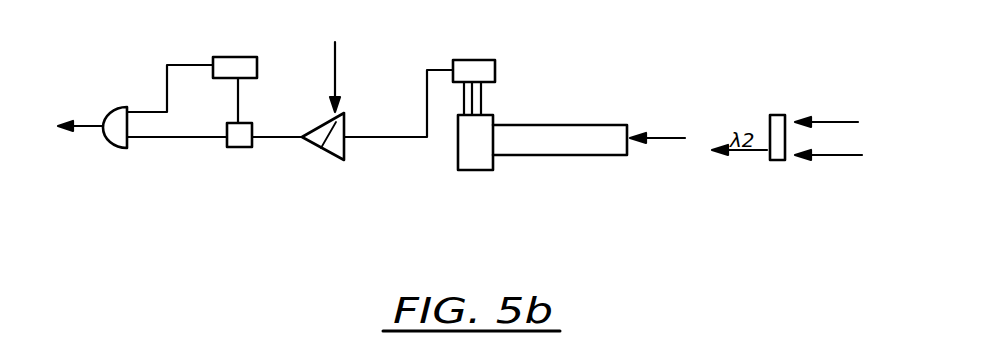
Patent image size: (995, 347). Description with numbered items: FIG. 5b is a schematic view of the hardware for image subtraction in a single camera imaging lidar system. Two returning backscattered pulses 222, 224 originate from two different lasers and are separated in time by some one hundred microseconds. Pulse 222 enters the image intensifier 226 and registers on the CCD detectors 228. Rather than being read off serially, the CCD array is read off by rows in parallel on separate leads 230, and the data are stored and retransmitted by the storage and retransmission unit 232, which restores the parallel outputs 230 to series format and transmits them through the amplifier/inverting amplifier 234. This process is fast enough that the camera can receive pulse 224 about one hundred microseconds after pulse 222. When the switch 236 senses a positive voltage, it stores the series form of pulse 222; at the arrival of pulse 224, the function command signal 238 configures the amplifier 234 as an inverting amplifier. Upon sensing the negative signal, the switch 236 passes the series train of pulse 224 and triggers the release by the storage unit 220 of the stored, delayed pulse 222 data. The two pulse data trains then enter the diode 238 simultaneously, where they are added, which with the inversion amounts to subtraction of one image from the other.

The storage and release unit 220 is at (235, 57).
The returning backscattered pulse 222 is at (660, 139).
The returning backscattered pulse 224 is at (833, 158).
The image intensifier 226 is at (543, 156).
The CCD detectors 228 is at (476, 171).
The separate leads 230 is at (485, 98).
The storage and retransmission unit 232 is at (485, 60).
The amplifier/inverting amplifier 234 is at (327, 155).
The switch 236 is at (238, 148).
The function command signal / diode 238 is at (110, 146).